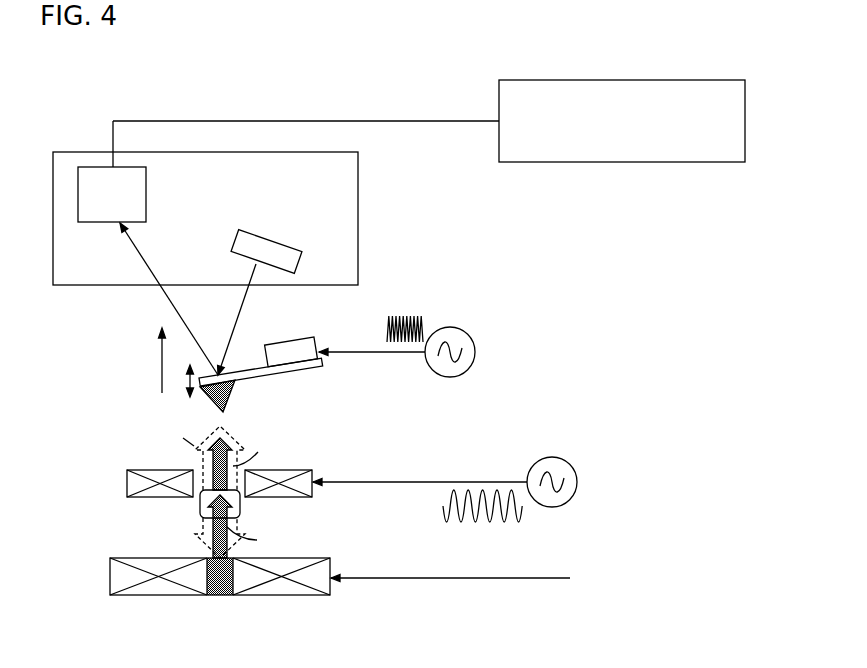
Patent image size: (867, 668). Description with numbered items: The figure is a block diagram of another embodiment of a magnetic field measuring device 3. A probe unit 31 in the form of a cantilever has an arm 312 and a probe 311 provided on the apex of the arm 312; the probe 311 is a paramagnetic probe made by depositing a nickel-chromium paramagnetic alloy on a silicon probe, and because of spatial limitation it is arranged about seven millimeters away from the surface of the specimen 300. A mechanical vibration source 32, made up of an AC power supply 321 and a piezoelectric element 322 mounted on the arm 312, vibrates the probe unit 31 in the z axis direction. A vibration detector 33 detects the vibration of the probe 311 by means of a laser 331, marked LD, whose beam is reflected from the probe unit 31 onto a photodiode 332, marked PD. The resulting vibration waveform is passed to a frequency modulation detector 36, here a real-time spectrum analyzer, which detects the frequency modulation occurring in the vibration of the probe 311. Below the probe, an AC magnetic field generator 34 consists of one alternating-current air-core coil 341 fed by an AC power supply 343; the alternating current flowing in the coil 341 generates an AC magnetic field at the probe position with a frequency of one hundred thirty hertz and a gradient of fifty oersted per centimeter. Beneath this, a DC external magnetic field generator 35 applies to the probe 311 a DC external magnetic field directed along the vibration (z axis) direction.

The magnetic field measuring device 3 is at (375, 90).
The vibration detector 33 is at (276, 248).
The laser 331 is at (259, 236).
The photodiode 332 is at (95, 223).
The frequency modulation detector 36 is at (538, 163).
The probe unit 31 is at (186, 387).
The probe 311 is at (210, 399).
The arm 312 is at (259, 377).
The mechanical vibration source 32 is at (398, 331).
The AC power supply 321 is at (451, 328).
The piezoelectric element 322 is at (302, 340).
The AC magnetic field generator 34 is at (337, 468).
The alternating-current coil 341 is at (155, 470).
The AC power supply 343 is at (552, 457).
The DC external magnetic field generator 35 is at (158, 595).
The specimen 300 is at (199, 519).